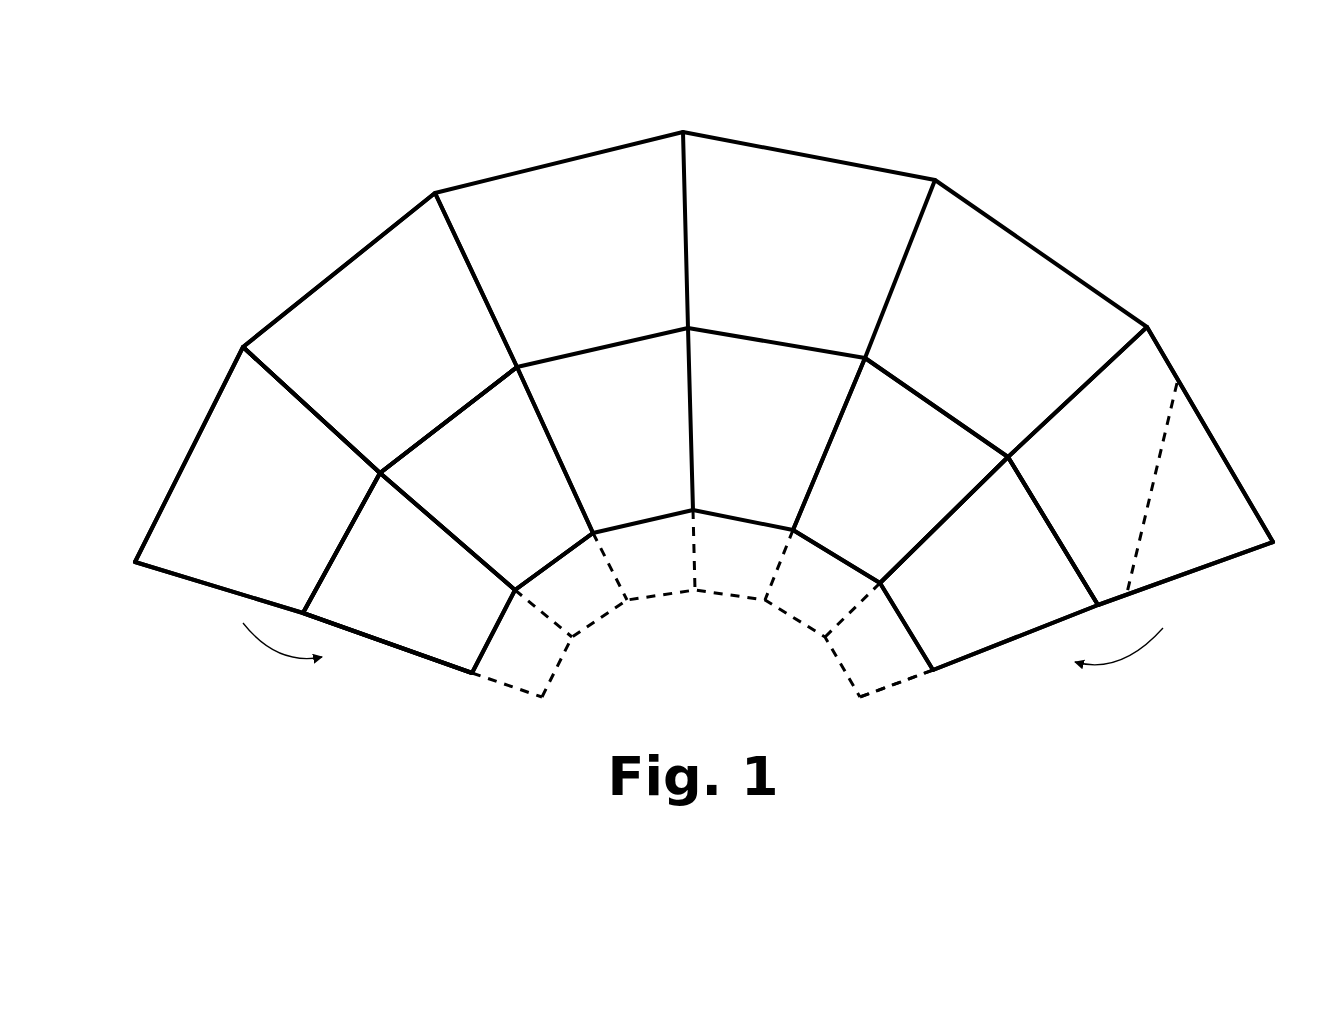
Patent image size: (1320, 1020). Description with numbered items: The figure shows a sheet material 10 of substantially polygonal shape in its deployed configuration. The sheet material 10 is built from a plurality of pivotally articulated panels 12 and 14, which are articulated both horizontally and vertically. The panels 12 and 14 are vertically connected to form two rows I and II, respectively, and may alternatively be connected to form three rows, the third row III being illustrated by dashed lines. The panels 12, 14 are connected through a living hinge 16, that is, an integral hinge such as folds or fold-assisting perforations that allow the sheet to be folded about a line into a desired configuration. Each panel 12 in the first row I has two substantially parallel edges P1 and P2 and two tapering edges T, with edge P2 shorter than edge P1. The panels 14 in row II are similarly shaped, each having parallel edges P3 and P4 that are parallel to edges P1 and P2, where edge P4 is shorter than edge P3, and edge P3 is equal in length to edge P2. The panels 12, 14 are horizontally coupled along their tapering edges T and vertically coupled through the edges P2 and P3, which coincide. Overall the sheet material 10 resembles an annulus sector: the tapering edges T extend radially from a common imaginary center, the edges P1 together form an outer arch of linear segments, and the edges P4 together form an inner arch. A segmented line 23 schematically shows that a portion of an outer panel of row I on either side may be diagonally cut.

The sheet material 10 is at (942, 155).
The living hinge 16 is at (940, 407).
The segmented line 23 is at (1162, 467).
The panel 12 is at (198, 537).
The panel 14 is at (448, 618).
The edge P1 is at (338, 268).
The edge P2 is at (440, 430).
The edge P3 is at (430, 433).
The edge P4 is at (528, 577).
The tapering edge T is at (345, 442).
The row I is at (207, 595).
The row II is at (353, 642).
The row III is at (910, 682).